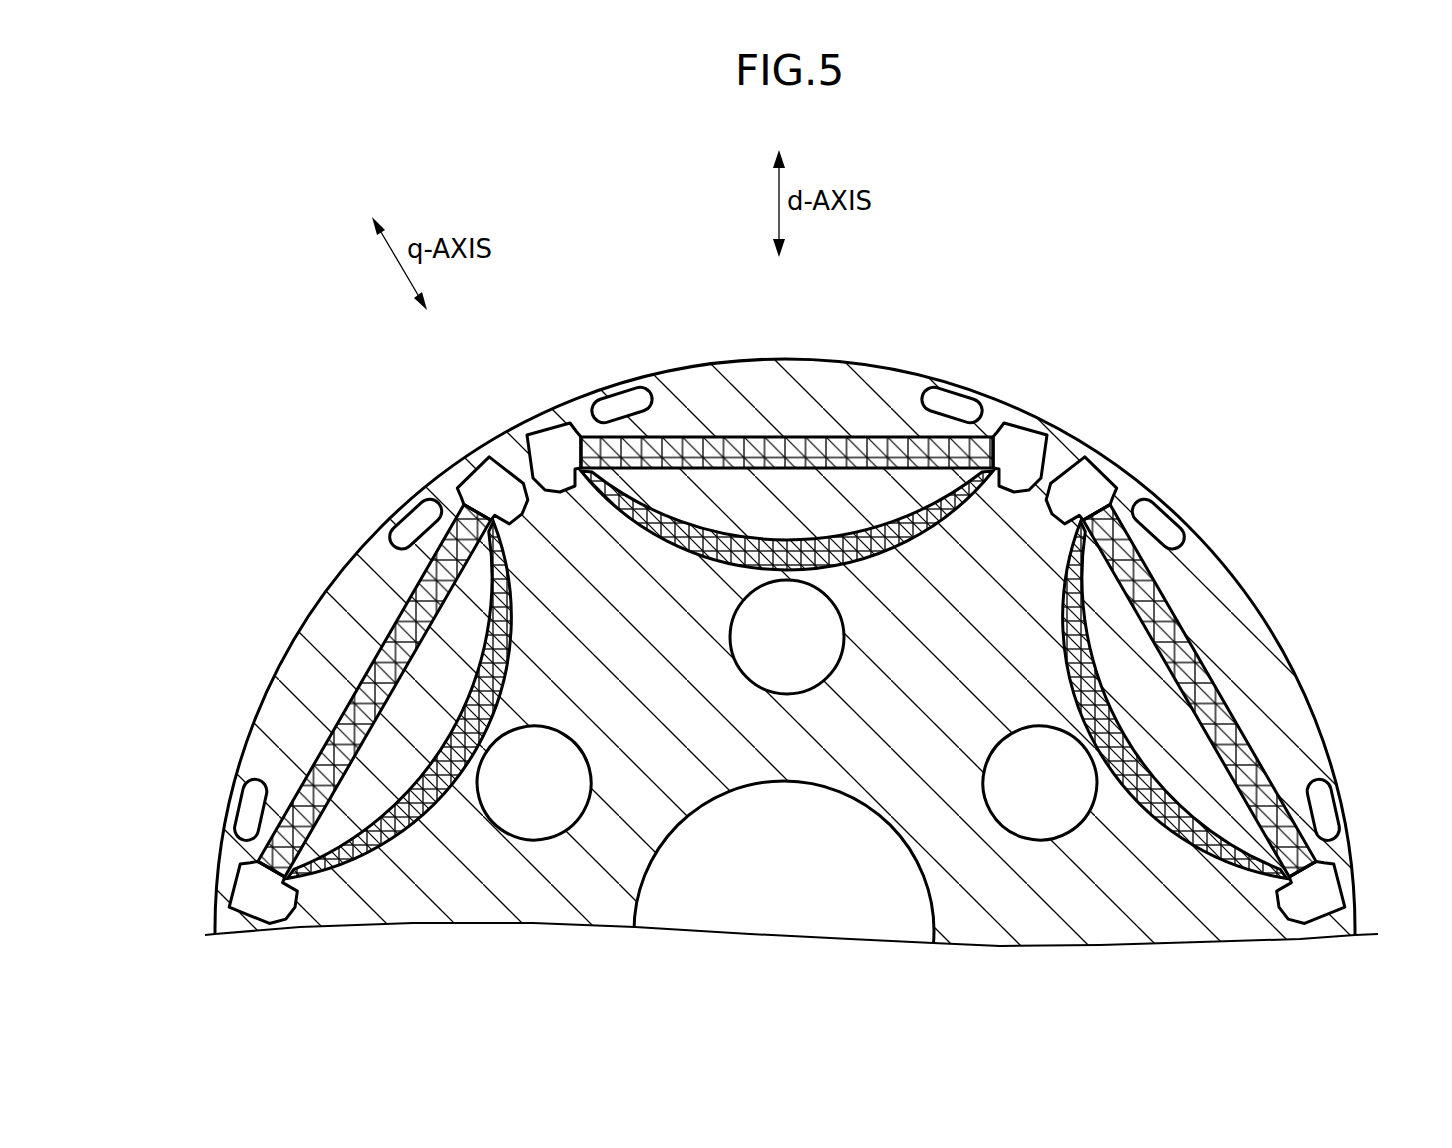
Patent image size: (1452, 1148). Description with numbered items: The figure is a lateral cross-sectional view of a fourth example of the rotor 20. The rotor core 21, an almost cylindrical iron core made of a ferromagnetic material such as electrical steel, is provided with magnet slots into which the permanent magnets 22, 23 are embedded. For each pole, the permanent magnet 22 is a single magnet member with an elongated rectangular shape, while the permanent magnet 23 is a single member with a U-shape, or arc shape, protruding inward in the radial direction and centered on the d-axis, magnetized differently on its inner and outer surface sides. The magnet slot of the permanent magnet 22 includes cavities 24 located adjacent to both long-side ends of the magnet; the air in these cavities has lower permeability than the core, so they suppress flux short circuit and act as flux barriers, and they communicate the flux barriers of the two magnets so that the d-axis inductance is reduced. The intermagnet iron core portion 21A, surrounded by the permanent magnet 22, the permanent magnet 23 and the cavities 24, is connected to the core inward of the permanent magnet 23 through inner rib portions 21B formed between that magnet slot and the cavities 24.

The rotor 20 is at (265, 168).
The rotor core 21 is at (910, 388).
The intermagnet iron core portion 21A is at (722, 478).
The inner rib portions 21B is at (587, 450).
The permanent magnet 22 is at (795, 437).
The permanent magnet 23 is at (512, 648).
The cavities 24 is at (546, 436).